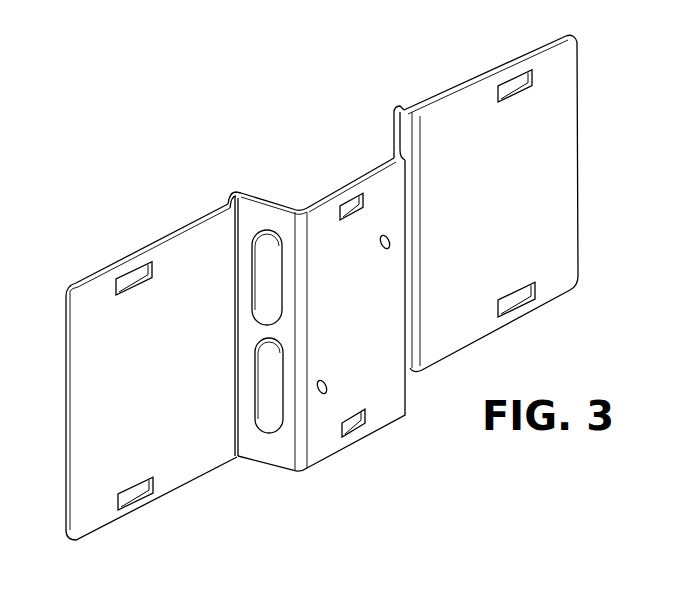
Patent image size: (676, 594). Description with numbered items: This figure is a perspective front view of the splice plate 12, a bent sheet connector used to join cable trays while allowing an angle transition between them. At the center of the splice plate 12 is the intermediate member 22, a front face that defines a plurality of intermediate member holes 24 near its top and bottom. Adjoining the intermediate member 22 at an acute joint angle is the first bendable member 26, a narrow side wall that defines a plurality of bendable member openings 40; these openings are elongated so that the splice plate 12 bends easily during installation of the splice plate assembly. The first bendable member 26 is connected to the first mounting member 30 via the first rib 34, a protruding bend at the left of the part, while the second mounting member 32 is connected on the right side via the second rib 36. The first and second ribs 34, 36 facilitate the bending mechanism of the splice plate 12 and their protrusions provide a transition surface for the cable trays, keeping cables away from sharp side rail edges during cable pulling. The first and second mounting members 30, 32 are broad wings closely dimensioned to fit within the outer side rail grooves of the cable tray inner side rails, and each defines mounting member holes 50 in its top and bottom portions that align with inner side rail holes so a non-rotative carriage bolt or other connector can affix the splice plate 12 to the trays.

The splice plate 12 is at (287, 126).
The intermediate member 22 is at (390, 398).
The intermediate member holes 24 is at (352, 192).
The first bendable member 26 is at (253, 443).
The first mounting member 30 is at (88, 413).
The second mounting member 32 is at (560, 172).
The first rib 34 is at (236, 190).
The second rib 36 is at (401, 106).
The bendable member openings 40 is at (268, 256).
The mounting member holes 50 is at (128, 277).